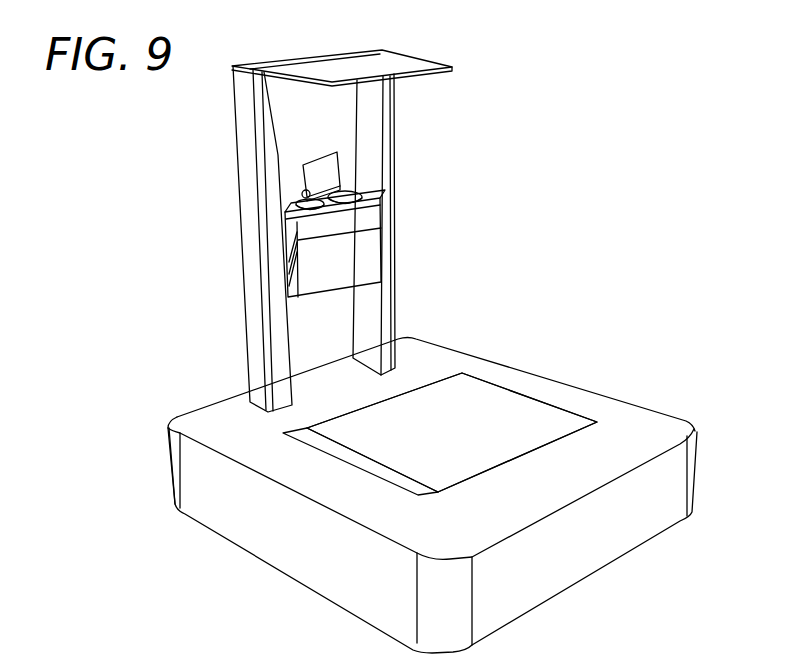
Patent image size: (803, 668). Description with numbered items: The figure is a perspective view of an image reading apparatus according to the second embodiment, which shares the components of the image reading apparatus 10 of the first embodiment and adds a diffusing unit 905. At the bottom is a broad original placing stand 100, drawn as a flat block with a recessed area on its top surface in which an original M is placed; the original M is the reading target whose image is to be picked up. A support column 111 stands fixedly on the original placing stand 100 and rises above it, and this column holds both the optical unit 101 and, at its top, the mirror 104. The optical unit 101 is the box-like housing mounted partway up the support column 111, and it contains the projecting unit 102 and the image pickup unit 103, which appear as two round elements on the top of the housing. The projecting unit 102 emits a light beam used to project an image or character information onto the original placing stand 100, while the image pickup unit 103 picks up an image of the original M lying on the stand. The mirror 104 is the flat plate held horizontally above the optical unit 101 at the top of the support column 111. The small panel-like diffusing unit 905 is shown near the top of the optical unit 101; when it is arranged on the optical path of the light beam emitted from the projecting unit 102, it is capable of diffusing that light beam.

The image reading apparatus 10 is at (566, 167).
The original placing stand 100 is at (470, 365).
The optical unit 101 is at (360, 258).
The projecting unit 102 is at (350, 198).
The image pickup unit 103 is at (296, 202).
The mirror 104 is at (397, 62).
The support column 111 is at (256, 273).
The diffusing unit 905 is at (331, 167).
The original M is at (510, 405).